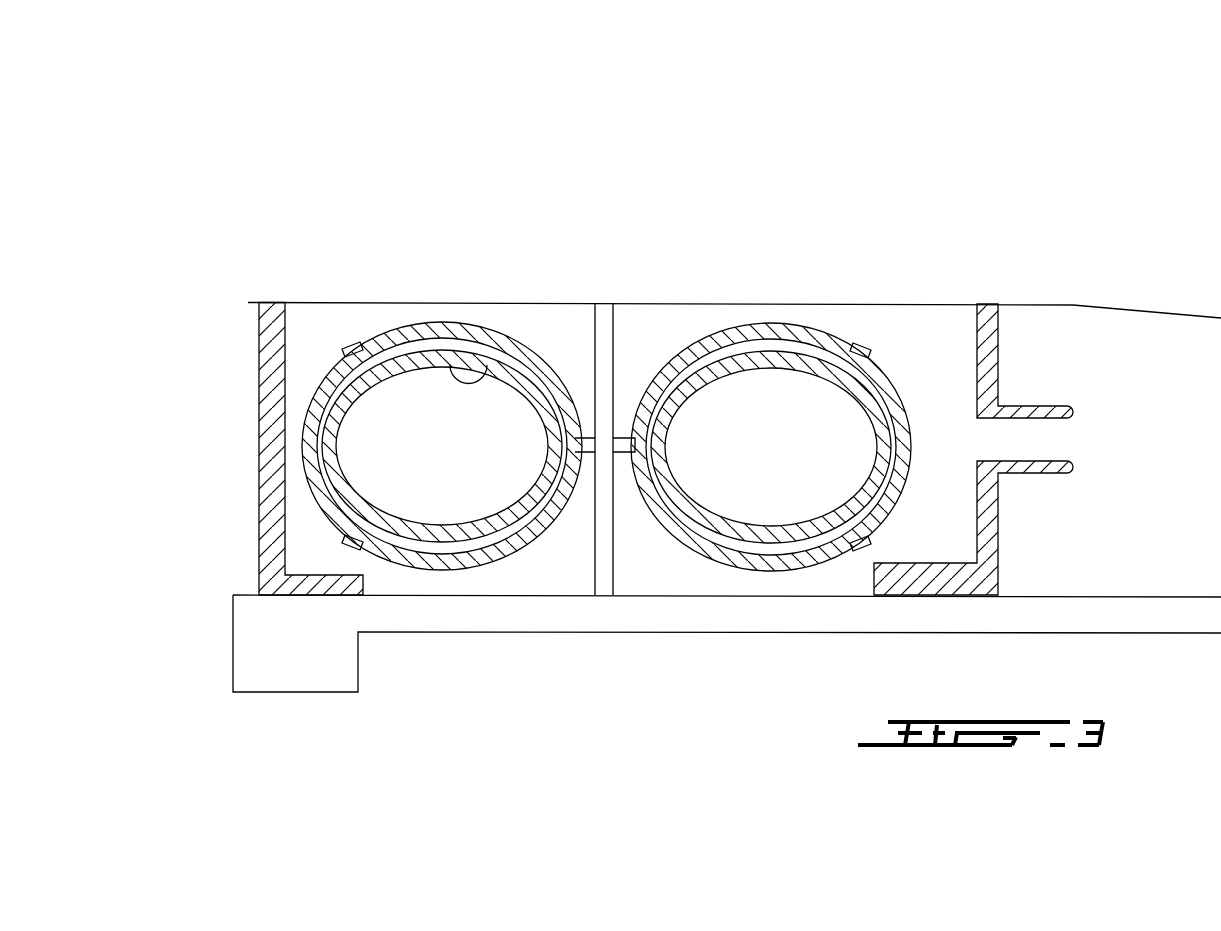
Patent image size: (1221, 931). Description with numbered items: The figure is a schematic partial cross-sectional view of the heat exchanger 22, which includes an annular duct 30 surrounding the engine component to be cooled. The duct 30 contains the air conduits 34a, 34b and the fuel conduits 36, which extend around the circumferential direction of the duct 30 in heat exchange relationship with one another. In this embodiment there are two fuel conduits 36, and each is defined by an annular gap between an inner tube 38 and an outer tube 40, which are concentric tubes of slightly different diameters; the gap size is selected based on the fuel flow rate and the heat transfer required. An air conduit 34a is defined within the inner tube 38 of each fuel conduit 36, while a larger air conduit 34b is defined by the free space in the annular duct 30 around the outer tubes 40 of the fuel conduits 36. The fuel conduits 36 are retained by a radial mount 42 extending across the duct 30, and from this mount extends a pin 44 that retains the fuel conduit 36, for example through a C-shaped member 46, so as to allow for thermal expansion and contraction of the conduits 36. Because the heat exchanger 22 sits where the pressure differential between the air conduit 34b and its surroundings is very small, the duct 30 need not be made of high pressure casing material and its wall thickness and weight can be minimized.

The heat exchanger 22 is at (236, 214).
The annular duct 30 is at (925, 304).
The air conduit 34a is at (763, 395).
The air conduit 34b is at (318, 332).
The fuel conduit 36 is at (700, 523).
The inner tube 38 is at (484, 382).
The outer tube 40 is at (414, 335).
The radial mount 42 is at (605, 324).
The pin 44 is at (625, 438).
The C-shaped member 46 is at (837, 338).